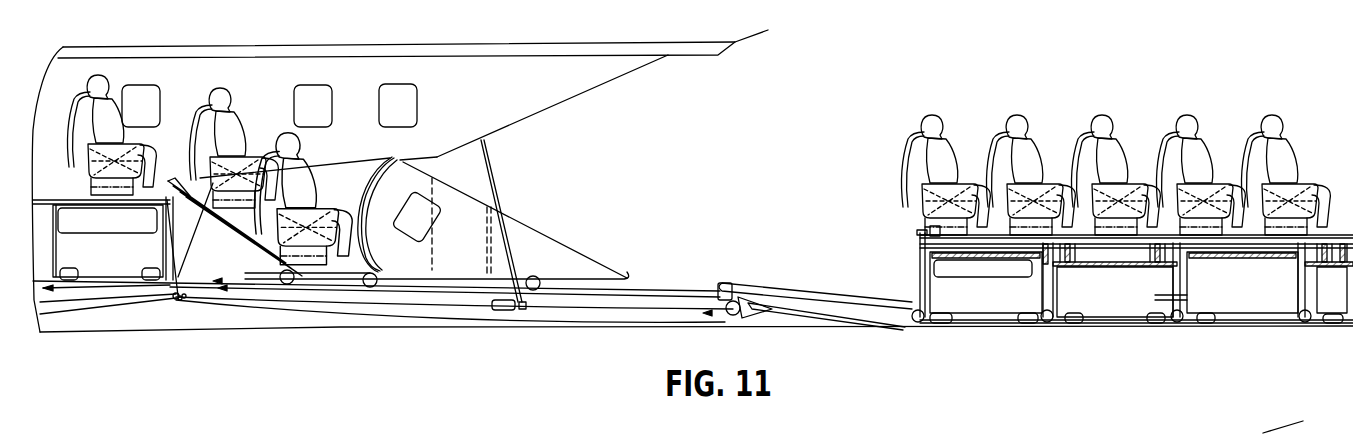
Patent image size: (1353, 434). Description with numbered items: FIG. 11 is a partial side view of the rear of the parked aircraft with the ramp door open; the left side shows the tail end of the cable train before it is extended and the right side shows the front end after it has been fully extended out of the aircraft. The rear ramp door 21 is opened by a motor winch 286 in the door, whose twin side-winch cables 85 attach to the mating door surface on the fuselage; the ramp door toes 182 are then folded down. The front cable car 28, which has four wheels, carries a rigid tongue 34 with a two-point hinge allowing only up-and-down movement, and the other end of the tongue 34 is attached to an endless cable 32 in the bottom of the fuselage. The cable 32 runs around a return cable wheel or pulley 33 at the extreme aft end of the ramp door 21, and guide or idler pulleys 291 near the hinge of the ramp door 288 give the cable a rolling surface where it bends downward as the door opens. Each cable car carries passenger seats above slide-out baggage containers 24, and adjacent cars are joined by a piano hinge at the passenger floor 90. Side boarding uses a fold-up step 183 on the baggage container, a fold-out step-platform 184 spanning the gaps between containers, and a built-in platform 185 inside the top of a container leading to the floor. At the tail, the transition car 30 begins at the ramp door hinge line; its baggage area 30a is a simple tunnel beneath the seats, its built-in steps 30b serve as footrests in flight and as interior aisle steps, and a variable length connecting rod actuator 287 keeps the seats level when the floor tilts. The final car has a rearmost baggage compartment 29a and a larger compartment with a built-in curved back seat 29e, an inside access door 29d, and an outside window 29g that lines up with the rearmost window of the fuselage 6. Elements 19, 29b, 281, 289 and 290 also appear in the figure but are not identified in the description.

The rearmost window of the fuselage 6 is at (247, 98).
The aircraft fuselage 19 is at (454, 43).
The rear ramp door 21 is at (290, 310).
The slide-out baggage container 24 is at (116, 258).
The front cable car 28 is at (917, 248).
The rearmost baggage compartment 29a is at (594, 278).
The pod strut 29b is at (490, 235).
The inside access door 29d is at (452, 168).
The built-in curved back seat 29e is at (367, 187).
The compartment outside window 29g is at (417, 217).
The transition car 30 is at (175, 240).
The baggage area 30a is at (231, 255).
The built-in steps 30b is at (270, 262).
The endless cable 32 is at (85, 273).
The return cable wheel or pulley 33 is at (750, 315).
The rigid tongue 34 is at (805, 275).
The twin side-winch cables 85 is at (518, 260).
The passenger floor 90 is at (48, 190).
The ramp door toes 182 is at (850, 318).
The fold-up step 183 is at (1173, 267).
The fold-out step-platform 184 is at (1073, 270).
The built-in platform 185 is at (987, 260).
The passenger seat 281 is at (82, 182).
The motor winch 286 is at (502, 310).
The variable length connecting rod actuator 287 is at (157, 202).
The ramp door hinge 288 is at (173, 300).
The rail 289 is at (438, 289).
The hinge 290 is at (182, 293).
The guide or idler pulleys 291 is at (233, 300).